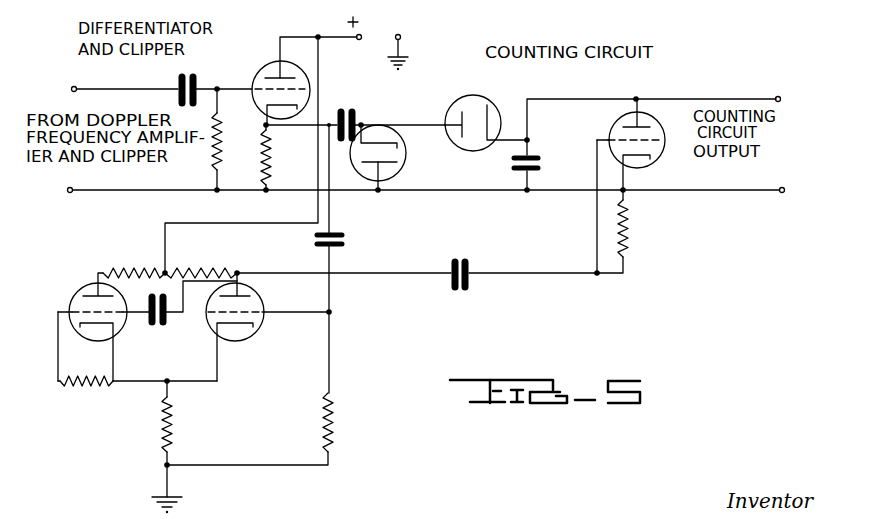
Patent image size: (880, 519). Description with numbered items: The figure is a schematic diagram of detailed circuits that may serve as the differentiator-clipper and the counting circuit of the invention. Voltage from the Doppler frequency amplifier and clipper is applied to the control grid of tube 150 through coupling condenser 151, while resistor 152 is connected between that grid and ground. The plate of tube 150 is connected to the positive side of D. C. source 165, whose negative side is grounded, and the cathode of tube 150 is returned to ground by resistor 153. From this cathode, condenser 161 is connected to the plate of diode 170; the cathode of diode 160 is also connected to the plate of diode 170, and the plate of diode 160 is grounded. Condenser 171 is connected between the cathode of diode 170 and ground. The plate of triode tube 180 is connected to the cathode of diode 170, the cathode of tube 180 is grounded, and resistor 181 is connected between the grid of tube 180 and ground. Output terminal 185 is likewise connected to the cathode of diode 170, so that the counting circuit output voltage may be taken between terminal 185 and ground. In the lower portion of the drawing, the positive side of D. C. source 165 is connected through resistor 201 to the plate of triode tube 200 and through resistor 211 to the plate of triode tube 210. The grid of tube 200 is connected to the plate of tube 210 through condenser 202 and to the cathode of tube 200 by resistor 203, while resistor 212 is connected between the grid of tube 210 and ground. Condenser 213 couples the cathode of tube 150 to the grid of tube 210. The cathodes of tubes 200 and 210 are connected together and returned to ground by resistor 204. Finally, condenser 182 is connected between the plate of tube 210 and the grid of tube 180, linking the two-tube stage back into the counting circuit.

The tube 150 is at (269, 64).
The coupling condenser 151 is at (199, 83).
The resistor 152 is at (222, 147).
The resistor 153 is at (267, 147).
The diode 160 is at (409, 152).
The condenser 161 is at (355, 117).
The D. C. source 165 is at (386, 33).
The diode 170 is at (489, 96).
The condenser 171 is at (537, 158).
The triode tube 180 is at (606, 124).
The resistor 181 is at (630, 227).
The condenser 182 is at (472, 272).
The output terminal 185 is at (775, 75).
The triode tube 200 is at (74, 286).
The resistor 201 is at (118, 268).
The condenser 202 is at (168, 318).
The resistor 203 is at (82, 383).
The resistor 204 is at (176, 421).
The triode tube 210 is at (267, 306).
The resistor 211 is at (198, 268).
The resistor 212 is at (333, 408).
The condenser 213 is at (346, 223).